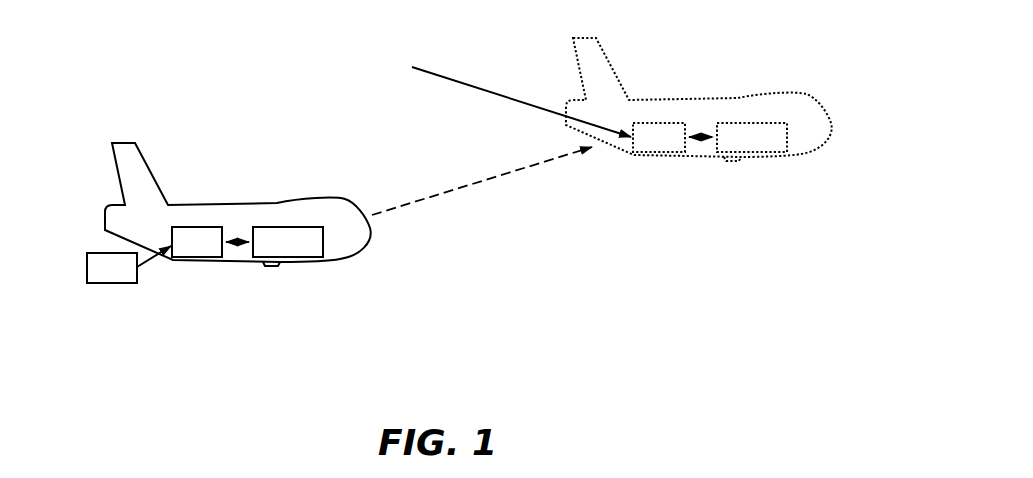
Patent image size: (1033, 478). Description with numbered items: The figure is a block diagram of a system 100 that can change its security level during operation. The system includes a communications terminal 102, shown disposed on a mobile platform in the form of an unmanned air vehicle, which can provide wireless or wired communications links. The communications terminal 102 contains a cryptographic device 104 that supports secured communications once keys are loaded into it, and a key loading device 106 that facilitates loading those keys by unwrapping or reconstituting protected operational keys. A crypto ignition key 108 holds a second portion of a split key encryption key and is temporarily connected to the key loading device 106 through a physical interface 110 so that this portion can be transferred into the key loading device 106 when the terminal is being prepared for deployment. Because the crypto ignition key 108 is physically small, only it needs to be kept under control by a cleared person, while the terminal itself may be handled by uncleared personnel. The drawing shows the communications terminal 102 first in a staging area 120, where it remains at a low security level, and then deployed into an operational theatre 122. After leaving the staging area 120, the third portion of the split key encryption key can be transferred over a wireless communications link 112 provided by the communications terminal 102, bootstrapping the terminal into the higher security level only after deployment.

The system 100 is at (137, 67).
The communications terminal 102 is at (278, 202).
The cryptographic device 104 is at (300, 262).
The key loading device 106 is at (207, 262).
The crypto ignition key 108 is at (87, 270).
The physical interface 110 is at (148, 263).
The wireless communications link 112 is at (487, 92).
The staging area 120 is at (385, 268).
The operational theatre 122 is at (590, 202).